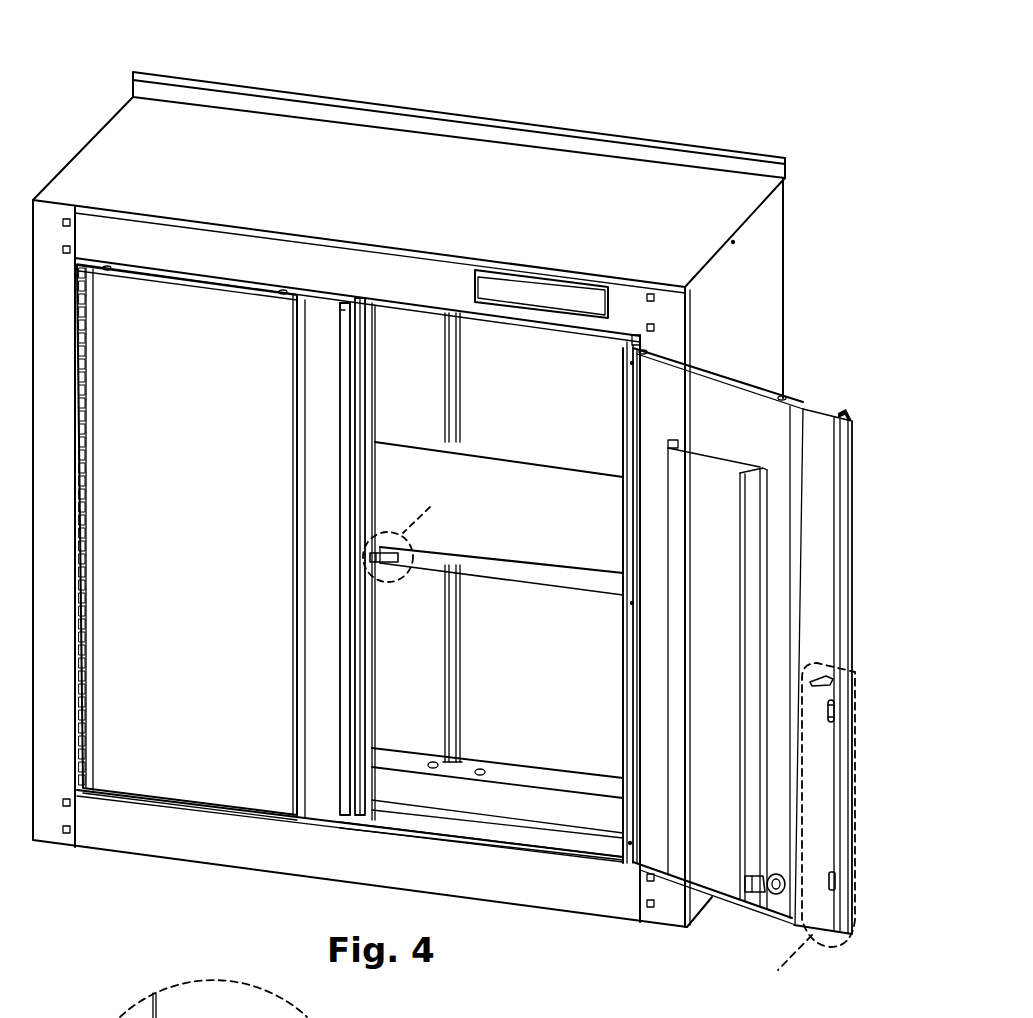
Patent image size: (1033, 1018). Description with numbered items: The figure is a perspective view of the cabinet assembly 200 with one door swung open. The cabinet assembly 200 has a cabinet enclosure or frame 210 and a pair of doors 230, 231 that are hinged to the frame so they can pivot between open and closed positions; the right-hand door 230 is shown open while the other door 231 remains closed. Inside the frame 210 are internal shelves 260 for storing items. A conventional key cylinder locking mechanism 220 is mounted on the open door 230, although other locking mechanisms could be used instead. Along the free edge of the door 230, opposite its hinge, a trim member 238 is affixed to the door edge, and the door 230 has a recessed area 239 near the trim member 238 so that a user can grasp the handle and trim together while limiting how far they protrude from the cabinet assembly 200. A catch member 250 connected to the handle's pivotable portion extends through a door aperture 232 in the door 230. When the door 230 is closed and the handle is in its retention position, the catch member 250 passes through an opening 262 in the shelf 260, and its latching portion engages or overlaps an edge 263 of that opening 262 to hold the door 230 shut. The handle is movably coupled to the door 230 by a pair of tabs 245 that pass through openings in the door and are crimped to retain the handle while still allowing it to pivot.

The cabinet assembly 200 is at (70, 92).
The cabinet enclosure or frame 210 is at (53, 293).
The key cylinder locking mechanism 220 is at (775, 893).
The door 230 is at (737, 380).
The door 231 is at (220, 768).
The door aperture 232 is at (833, 713).
The trim member 238 is at (342, 328).
The recessed area 239 is at (327, 788).
The tabs 245 is at (833, 875).
The catch member 250 is at (835, 660).
The shelf 260 is at (433, 563).
The opening 262 is at (408, 541).
The edge 263 is at (381, 548).